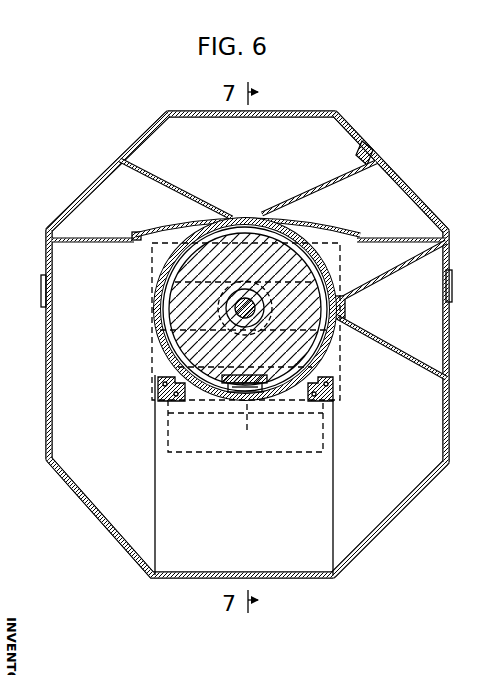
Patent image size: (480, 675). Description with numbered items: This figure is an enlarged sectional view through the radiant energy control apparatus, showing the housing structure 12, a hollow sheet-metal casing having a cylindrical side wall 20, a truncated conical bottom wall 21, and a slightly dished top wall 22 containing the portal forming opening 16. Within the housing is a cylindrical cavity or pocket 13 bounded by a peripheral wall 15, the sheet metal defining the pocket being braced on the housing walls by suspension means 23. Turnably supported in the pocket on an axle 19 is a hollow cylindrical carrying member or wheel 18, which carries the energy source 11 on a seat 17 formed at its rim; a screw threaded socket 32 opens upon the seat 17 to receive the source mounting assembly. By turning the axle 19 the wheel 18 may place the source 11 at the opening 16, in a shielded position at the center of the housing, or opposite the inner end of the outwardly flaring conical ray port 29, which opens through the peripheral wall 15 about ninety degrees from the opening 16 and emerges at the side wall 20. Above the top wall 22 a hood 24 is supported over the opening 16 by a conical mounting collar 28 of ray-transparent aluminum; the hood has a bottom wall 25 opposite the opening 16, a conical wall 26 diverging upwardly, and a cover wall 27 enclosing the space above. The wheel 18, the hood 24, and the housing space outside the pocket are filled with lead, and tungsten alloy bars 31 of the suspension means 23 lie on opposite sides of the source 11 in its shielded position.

The energy source 11 is at (250, 403).
The housing structure 12 is at (52, 203).
The cavity or pocket 13 is at (166, 273).
The peripheral wall 15 is at (343, 259).
The portal forming opening 16 is at (226, 217).
The seat 17 is at (224, 393).
The carrying member or wheel 18 is at (152, 303).
The axle 19 is at (230, 307).
The side wall 20 is at (47, 411).
The bottom wall 21 is at (354, 551).
The top wall 22 is at (114, 237).
The suspension means 23 is at (152, 351).
The hood 24 is at (190, 104).
The bottom wall 25 is at (244, 215).
The conical wall 26 is at (331, 184).
The cover wall 27 is at (271, 119).
The conical mounting collar 28 is at (407, 179).
The conical ray port 29 is at (391, 310).
The tungsten alloy bars 31 is at (158, 389).
The screw threaded socket 32 is at (262, 393).